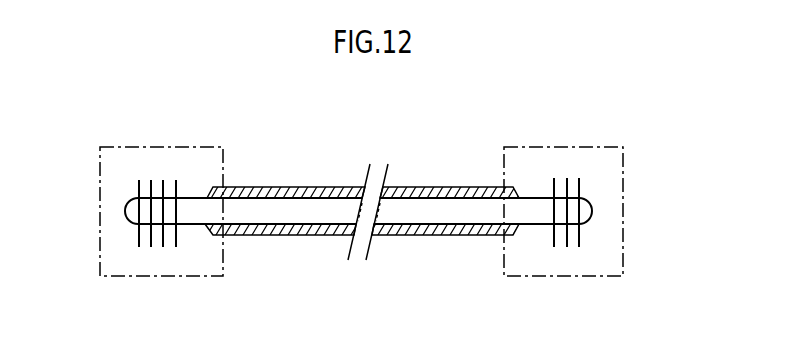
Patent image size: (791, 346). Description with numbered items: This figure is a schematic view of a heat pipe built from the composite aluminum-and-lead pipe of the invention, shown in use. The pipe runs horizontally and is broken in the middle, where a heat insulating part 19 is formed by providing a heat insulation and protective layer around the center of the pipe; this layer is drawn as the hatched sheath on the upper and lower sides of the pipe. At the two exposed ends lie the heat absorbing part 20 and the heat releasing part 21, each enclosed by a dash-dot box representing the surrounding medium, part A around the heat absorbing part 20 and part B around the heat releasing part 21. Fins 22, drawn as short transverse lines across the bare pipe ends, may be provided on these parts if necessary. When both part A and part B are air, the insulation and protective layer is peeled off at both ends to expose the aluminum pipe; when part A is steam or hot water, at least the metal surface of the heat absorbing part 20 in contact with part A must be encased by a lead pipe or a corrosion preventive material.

The heat insulating part 19 is at (307, 235).
The heat absorbing part 20 is at (540, 212).
The heat releasing part 21 is at (127, 213).
The fins 22 is at (580, 236).
The part A is at (603, 197).
The part B is at (180, 165).